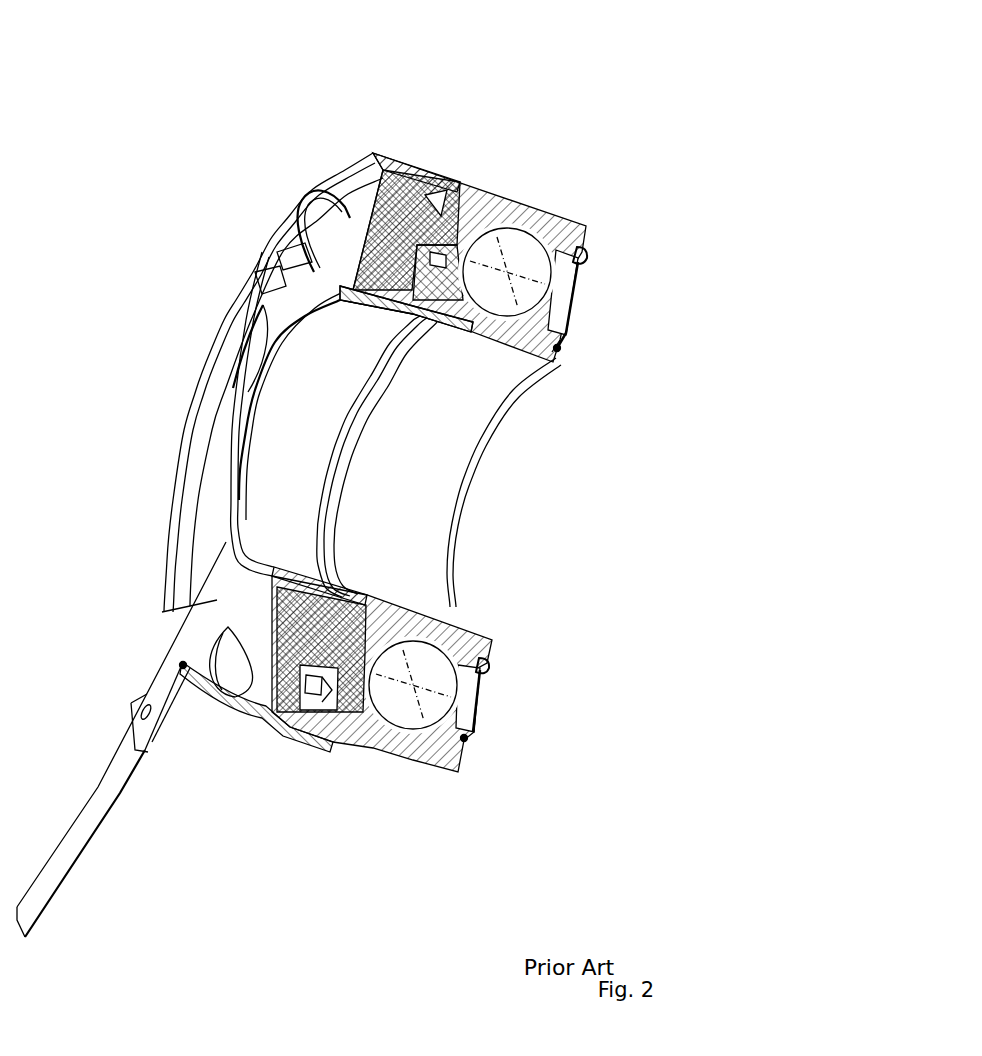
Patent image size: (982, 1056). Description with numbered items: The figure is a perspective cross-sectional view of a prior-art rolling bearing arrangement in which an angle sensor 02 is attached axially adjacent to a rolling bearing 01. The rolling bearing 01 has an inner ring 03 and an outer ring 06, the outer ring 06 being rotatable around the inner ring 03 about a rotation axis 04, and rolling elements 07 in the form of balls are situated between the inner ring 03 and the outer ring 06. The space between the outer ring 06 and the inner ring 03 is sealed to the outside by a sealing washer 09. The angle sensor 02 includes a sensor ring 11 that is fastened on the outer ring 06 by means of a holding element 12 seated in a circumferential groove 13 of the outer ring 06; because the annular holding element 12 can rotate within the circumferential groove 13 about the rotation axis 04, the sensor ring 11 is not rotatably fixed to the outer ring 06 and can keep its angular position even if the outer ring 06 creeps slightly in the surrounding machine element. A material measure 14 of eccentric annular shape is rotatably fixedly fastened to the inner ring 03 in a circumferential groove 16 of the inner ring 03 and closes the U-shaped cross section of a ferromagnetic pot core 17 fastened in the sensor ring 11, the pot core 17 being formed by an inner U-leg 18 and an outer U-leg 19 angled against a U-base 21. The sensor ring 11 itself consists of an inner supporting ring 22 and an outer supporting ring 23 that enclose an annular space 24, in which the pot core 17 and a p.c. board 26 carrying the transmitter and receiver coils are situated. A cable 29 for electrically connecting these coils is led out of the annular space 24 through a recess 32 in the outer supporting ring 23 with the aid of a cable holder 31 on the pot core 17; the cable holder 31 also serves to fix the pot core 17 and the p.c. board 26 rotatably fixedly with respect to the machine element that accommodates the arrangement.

The rolling bearing 01 is at (537, 177).
The angle sensor 02 is at (428, 143).
The inner ring 03 is at (560, 345).
The rotation axis 04 is at (300, 430).
The outer ring 06 is at (580, 232).
The rolling elements 07 is at (575, 272).
The sealing washer 09 is at (573, 303).
The sensor ring 11 is at (385, 137).
The holding element 12 is at (340, 715).
The circumferential groove 13 is at (362, 735).
The material measure 14 is at (515, 360).
The circumferential groove 16 is at (455, 606).
The pot core 17 is at (300, 258).
The inner U-leg 18 is at (350, 290).
The outer U-leg 19 is at (345, 213).
The U-base 21 is at (343, 228).
The inner supporting ring 22 is at (285, 360).
The outer supporting ring 23 is at (285, 735).
The annular space 24 is at (250, 672).
The p.c. board 26 is at (383, 195).
The cable 29 is at (78, 845).
The cable holder 31 is at (136, 698).
The recess 32 is at (178, 622).